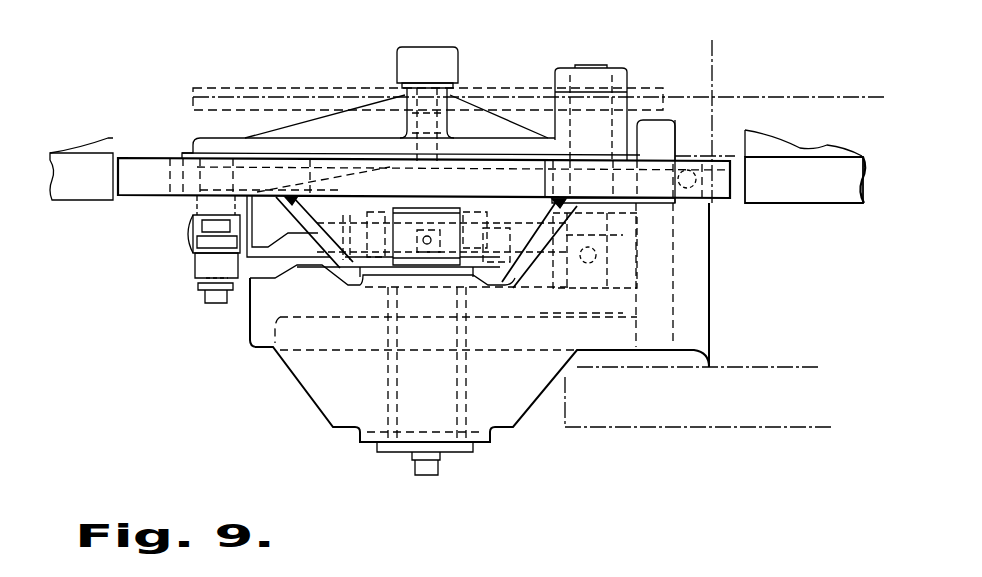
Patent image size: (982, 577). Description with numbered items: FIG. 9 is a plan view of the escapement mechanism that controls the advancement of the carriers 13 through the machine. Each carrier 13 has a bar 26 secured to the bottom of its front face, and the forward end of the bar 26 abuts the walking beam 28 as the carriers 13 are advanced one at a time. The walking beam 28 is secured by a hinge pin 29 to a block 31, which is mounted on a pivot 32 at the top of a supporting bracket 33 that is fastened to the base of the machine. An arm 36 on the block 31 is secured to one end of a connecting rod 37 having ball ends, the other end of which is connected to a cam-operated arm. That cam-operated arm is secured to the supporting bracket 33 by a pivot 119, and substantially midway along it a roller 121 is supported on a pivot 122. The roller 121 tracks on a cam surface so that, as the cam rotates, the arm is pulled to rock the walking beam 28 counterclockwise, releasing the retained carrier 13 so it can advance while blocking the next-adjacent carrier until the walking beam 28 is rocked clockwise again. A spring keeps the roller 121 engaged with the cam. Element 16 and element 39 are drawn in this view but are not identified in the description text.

The carrier 13 is at (808, 150).
The mounting plate 16 is at (210, 140).
The bar 26 is at (75, 160).
The walking beam 28 is at (142, 185).
The hinge pin 29 is at (500, 297).
The block 31 is at (403, 238).
The pivot 32 is at (485, 432).
The supporting bracket 33 is at (317, 407).
The arm 36 is at (245, 270).
The connecting rod 37 is at (195, 267).
The clamp 39 is at (197, 238).
The pivot 119 is at (597, 66).
The roller 121 is at (398, 52).
The pivot 122 is at (462, 72).